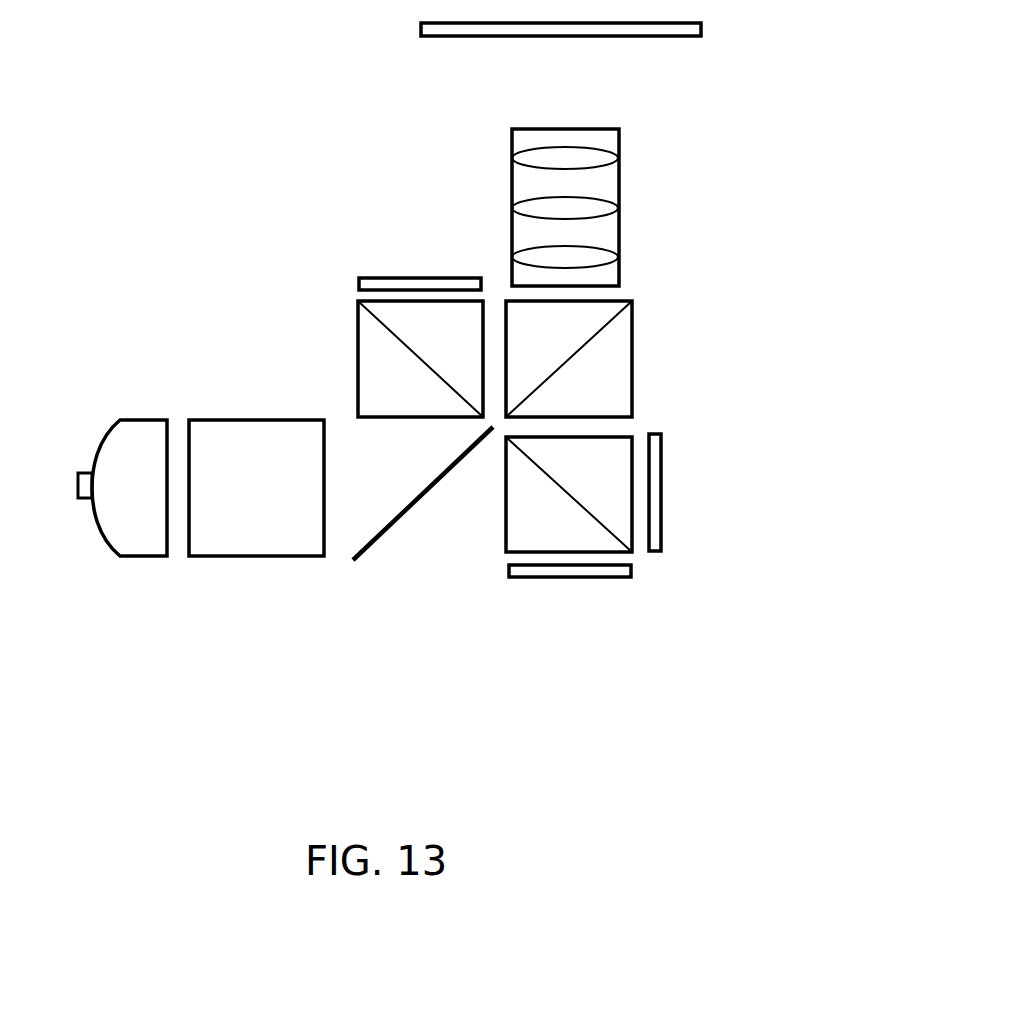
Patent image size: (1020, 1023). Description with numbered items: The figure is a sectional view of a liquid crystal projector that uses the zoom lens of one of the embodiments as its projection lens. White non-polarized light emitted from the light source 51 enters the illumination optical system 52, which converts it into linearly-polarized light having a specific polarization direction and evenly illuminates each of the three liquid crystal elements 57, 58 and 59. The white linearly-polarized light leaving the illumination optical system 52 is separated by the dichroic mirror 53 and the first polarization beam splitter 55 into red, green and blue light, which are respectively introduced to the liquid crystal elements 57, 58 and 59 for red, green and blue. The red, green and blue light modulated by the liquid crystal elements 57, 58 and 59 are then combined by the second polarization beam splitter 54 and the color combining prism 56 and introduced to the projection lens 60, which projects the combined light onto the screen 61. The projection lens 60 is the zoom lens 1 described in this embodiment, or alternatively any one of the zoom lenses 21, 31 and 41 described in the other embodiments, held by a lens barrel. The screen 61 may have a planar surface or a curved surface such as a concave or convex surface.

The zoom lens 1 is at (652, 207).
The zoom lens 21 is at (565, 207).
The zoom lens 31 is at (565, 207).
The zoom lens 41 is at (619, 157).
The light source 51 is at (104, 480).
The illumination optical system 52 is at (256, 530).
The dichroic mirror 53 is at (420, 526).
The second polarization beam splitter 54 is at (386, 359).
The first polarization beam splitter 55 is at (540, 497).
The color combining prism 56 is at (609, 359).
The liquid crystal element 57 is at (420, 251).
The liquid crystal element 58 is at (570, 598).
The liquid crystal element 59 is at (691, 492).
The projection lens 60 is at (671, 207).
The screen 61 is at (571, 49).